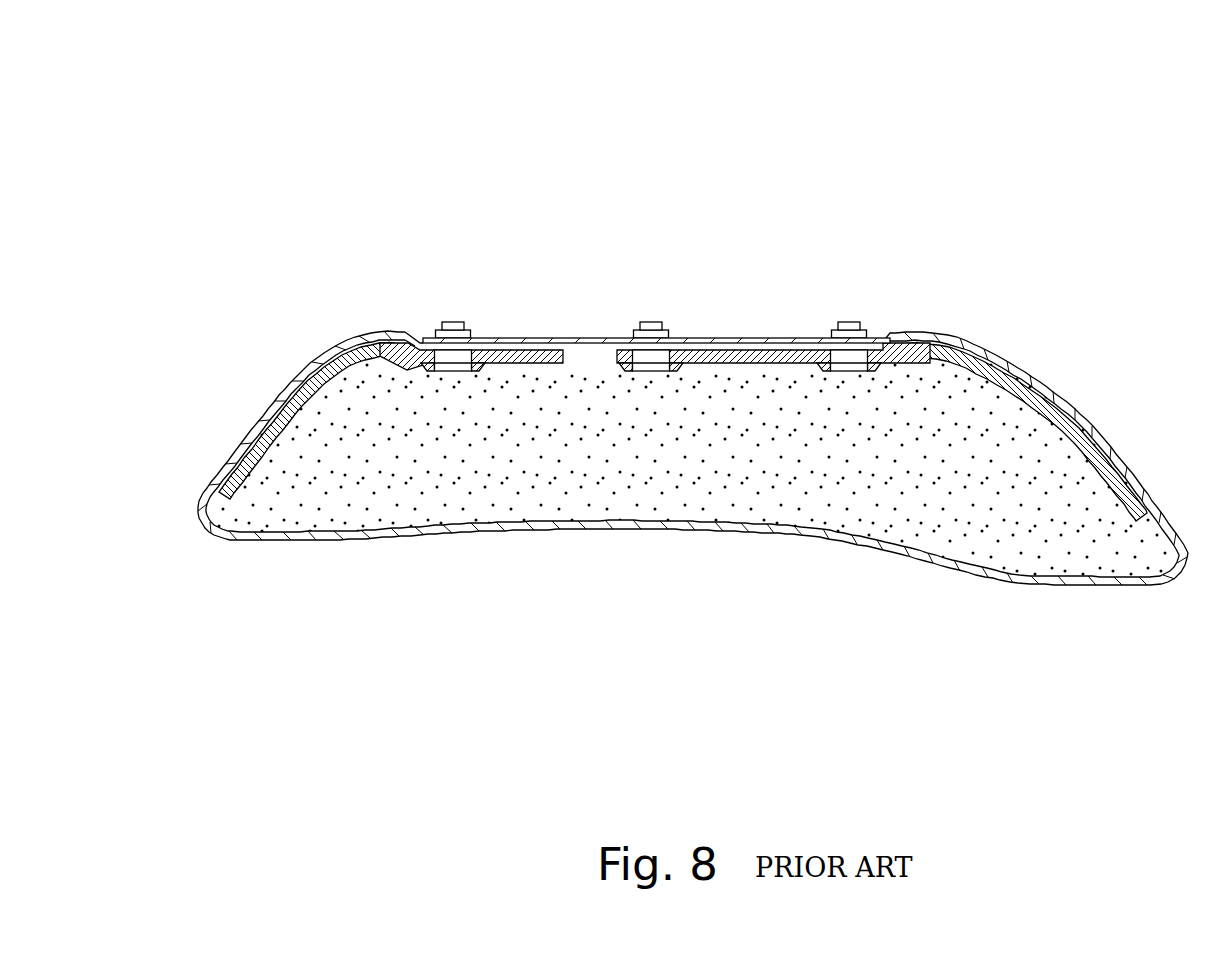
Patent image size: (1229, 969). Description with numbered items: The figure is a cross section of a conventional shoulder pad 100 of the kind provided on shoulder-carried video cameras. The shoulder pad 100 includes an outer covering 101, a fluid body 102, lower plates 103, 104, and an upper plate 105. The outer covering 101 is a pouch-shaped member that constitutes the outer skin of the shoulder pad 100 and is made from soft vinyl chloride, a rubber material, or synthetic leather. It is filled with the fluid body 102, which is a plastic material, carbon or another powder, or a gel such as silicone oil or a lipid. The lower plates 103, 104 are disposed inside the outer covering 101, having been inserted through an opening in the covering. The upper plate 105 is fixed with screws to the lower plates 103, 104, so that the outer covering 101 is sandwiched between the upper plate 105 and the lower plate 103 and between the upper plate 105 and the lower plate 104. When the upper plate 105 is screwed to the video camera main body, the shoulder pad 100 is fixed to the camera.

The shoulder pad 100 is at (1025, 165).
The outer covering 101 is at (772, 527).
The fluid body 102 is at (960, 500).
The lower plate 103 is at (291, 404).
The lower plate 104 is at (771, 346).
The upper plate 105 is at (582, 340).